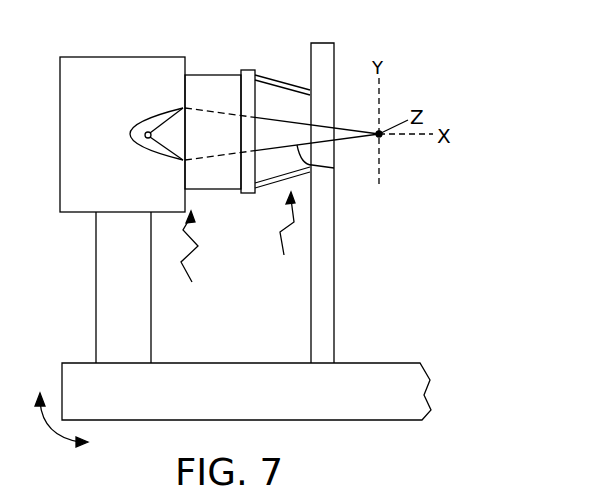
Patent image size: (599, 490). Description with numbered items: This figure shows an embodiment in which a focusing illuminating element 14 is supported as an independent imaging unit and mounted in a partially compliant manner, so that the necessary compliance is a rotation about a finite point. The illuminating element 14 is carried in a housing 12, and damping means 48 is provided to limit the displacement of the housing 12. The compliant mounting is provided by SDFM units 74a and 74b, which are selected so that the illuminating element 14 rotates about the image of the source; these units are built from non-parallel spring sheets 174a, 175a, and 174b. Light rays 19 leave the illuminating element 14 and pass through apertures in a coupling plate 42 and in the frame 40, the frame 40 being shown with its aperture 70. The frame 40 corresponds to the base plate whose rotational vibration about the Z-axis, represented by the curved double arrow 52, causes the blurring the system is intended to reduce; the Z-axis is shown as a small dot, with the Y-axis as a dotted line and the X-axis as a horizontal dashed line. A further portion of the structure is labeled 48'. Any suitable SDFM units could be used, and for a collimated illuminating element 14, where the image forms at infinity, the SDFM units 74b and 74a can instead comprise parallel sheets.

The housing 12 is at (97, 57).
The focusing illuminating element 14 is at (158, 107).
The spring sheet 174b is at (208, 75).
The coupling plate 42 is at (247, 193).
The spring sheet 175a is at (272, 78).
The spring sheet 174a is at (265, 192).
The aperture 70 is at (334, 122).
The frame 40 is at (311, 352).
The light rays 19 is at (334, 140).
The SDFM unit 74b is at (186, 263).
The SDFM unit 74a is at (284, 241).
The damping means 48 is at (154, 287).
The base 48' is at (266, 359).
The curved double arrow 52 is at (60, 443).